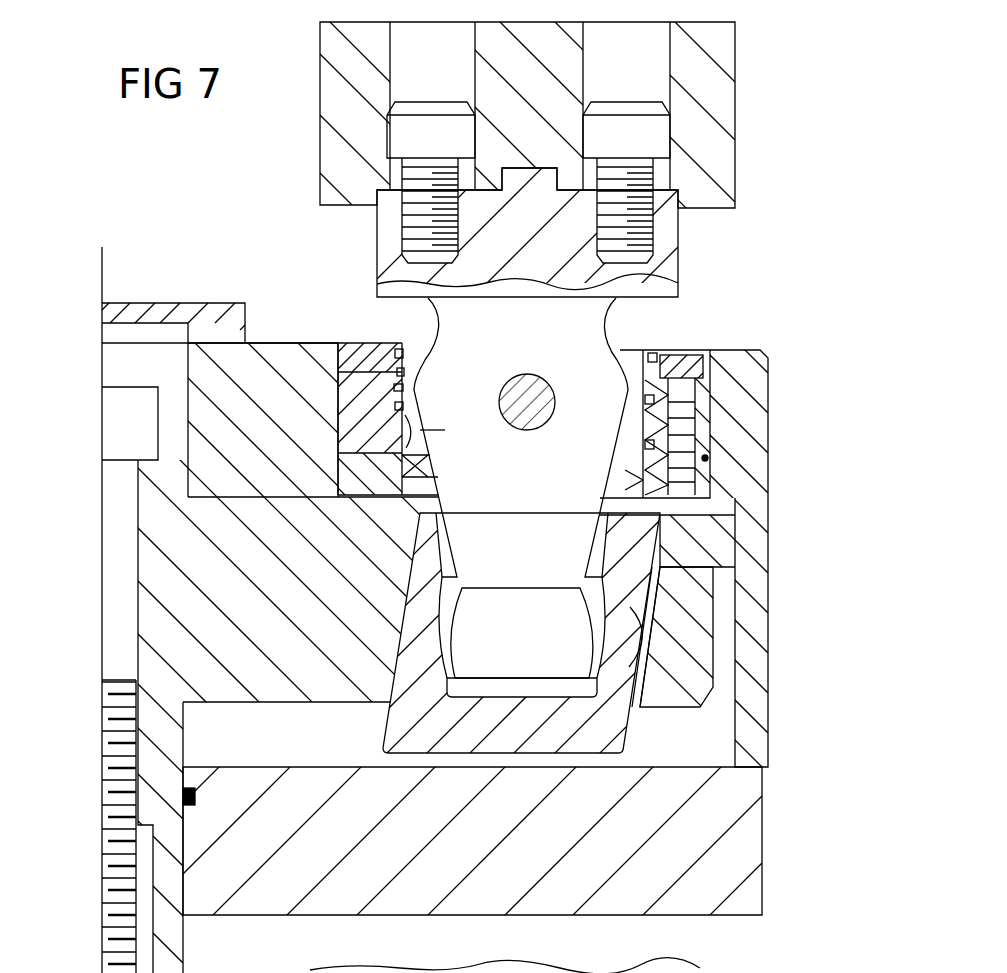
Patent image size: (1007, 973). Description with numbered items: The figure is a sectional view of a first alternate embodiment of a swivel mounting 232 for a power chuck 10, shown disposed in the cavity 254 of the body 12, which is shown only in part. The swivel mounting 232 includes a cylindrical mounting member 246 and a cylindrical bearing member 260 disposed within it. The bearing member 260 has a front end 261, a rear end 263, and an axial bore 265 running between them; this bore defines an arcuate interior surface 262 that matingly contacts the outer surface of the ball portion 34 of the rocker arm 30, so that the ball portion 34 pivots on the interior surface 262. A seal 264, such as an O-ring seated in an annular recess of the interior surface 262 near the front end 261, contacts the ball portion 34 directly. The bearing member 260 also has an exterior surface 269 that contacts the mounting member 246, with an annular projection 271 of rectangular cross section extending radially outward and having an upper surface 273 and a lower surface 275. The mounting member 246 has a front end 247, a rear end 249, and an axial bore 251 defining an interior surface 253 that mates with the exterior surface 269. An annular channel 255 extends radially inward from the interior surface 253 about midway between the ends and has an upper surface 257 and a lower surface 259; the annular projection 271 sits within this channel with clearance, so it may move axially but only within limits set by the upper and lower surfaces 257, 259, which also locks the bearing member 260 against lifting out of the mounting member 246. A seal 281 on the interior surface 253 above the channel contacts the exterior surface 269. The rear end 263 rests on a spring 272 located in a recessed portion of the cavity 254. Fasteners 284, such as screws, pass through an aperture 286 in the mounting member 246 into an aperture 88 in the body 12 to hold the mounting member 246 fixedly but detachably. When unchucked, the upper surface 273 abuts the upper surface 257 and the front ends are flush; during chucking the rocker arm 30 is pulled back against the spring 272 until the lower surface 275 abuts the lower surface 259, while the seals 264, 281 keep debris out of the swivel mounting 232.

The power chuck 10 is at (180, 201).
The rocker arm 30 is at (682, 232).
The body 12 is at (750, 735).
The bearing member 260 is at (378, 343).
The front end 247 is at (350, 347).
The mounting member 246 is at (341, 345).
The axial bore 251 is at (395, 352).
The exterior surface 269 is at (397, 373).
The upper surface 257 is at (394, 388).
The annular projection 271 is at (396, 406).
The lower surface 259 is at (405, 436).
The ball portion 34 is at (398, 462).
The rear end 249 is at (398, 485).
The rear end 263 is at (398, 497).
The axial bore 265 is at (645, 348).
The seal 264 is at (655, 350).
The front end 261 is at (668, 350).
The swivel mounting 232 is at (672, 345).
The seal 281 is at (700, 358).
The upper surface 273 is at (690, 370).
The fasteners 284 is at (680, 405).
The annular channel 255 is at (683, 440).
The lower surface 275 is at (706, 458).
The aperture 286 is at (683, 493).
The cavity 254 is at (690, 525).
The interior surface 262 is at (685, 560).
The interior surface 253 is at (680, 592).
The aperture 88 is at (690, 640).
The spring 272 is at (655, 690).